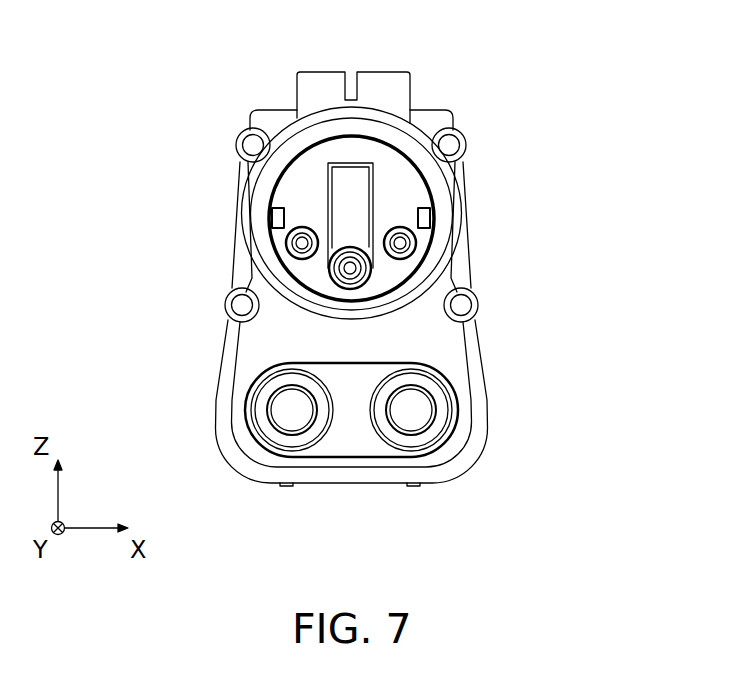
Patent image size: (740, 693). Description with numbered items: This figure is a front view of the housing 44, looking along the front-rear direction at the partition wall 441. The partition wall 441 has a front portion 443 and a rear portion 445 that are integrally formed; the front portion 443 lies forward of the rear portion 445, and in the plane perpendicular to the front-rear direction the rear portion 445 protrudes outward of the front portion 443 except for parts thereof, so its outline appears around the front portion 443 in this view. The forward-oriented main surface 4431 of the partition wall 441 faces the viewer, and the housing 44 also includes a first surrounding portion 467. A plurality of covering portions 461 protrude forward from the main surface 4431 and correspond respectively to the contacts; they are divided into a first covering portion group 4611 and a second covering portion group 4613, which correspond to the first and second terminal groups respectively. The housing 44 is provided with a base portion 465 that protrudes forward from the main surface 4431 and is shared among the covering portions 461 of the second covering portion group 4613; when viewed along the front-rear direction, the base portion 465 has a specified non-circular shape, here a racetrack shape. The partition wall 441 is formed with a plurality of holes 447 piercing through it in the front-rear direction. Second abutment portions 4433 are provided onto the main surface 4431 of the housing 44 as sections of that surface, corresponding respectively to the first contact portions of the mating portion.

The housing 44 is at (353, 291).
The front portion 443 is at (368, 110).
The partition wall 441 is at (378, 159).
The first surrounding portion 467 is at (307, 122).
The second abutment portions 4433 is at (247, 133).
The holes 447 is at (257, 146).
The first covering portion group 4611 is at (290, 262).
The covering portions 461 is at (277, 396).
The main surface 4431 is at (282, 343).
The rear portion 445 is at (487, 343).
The base portion 465 is at (303, 457).
The second covering portion group 4613 is at (385, 440).